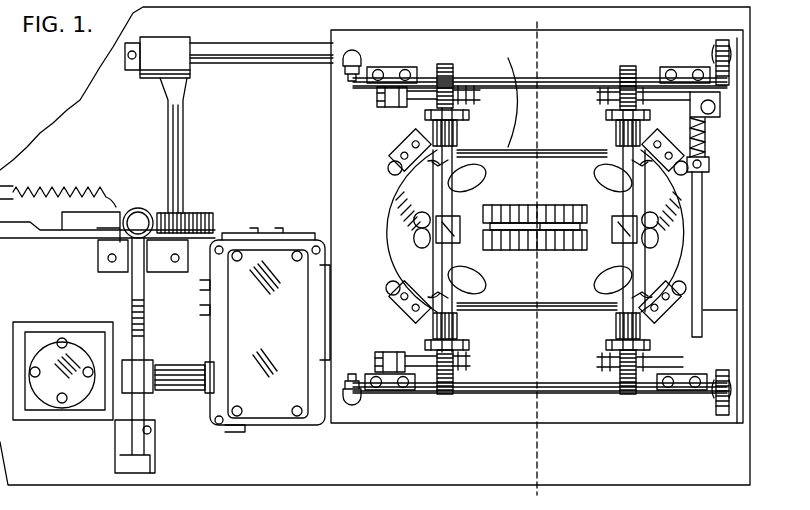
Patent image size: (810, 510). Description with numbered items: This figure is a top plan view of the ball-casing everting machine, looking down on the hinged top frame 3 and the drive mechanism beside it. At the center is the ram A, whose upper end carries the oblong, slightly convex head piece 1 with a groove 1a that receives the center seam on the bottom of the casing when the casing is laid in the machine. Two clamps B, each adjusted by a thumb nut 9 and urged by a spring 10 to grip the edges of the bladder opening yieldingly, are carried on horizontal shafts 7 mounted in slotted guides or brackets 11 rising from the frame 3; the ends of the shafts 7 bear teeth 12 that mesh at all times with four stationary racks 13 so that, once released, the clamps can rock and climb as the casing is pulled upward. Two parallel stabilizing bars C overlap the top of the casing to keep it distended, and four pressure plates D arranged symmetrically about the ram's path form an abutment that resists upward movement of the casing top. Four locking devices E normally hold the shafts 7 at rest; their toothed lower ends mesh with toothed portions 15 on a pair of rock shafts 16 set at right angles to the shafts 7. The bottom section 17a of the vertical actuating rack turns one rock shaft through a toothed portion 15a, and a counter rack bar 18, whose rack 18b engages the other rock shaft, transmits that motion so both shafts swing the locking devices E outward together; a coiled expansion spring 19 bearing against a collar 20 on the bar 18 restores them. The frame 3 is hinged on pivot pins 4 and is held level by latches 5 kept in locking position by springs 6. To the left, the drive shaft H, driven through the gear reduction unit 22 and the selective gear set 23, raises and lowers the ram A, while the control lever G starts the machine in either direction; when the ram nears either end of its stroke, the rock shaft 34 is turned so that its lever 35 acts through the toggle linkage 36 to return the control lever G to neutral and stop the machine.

The head piece 1 is at (548, 251).
The groove 1a is at (543, 222).
The top frame 3 is at (522, 17).
The pivot pins 4 is at (350, 56).
The latches 5 is at (722, 40).
The springs 6 is at (731, 52).
The shafts 7 is at (440, 256).
The thumb nut 9 is at (410, 229).
The spring 10 is at (420, 192).
The guides or brackets 11 is at (425, 114).
The teeth 12 is at (458, 133).
The racks 13 is at (398, 136).
The toothed portions 15 is at (470, 90).
The toothed portion 15a is at (688, 67).
The rock shafts 16 is at (492, 86).
The bottom portion of actuating rack 17a is at (718, 108).
The counter rack bar 18 is at (702, 212).
The rack 18b is at (720, 323).
The coiled expansion spring 19 is at (707, 140).
The collar 20 is at (707, 170).
The gear reduction unit 22 is at (268, 243).
The selective gear set 23 is at (60, 321).
The rock shaft 34 is at (235, 48).
The lever 35 is at (170, 152).
The toggle linkage 36 is at (192, 211).
The ram A is at (523, 257).
The clamps B is at (460, 243).
The stabilizing bars C is at (556, 318).
The pressure plates D is at (487, 173).
The locking devices E is at (441, 64).
The control lever G is at (138, 208).
The drive shaft H is at (320, 304).